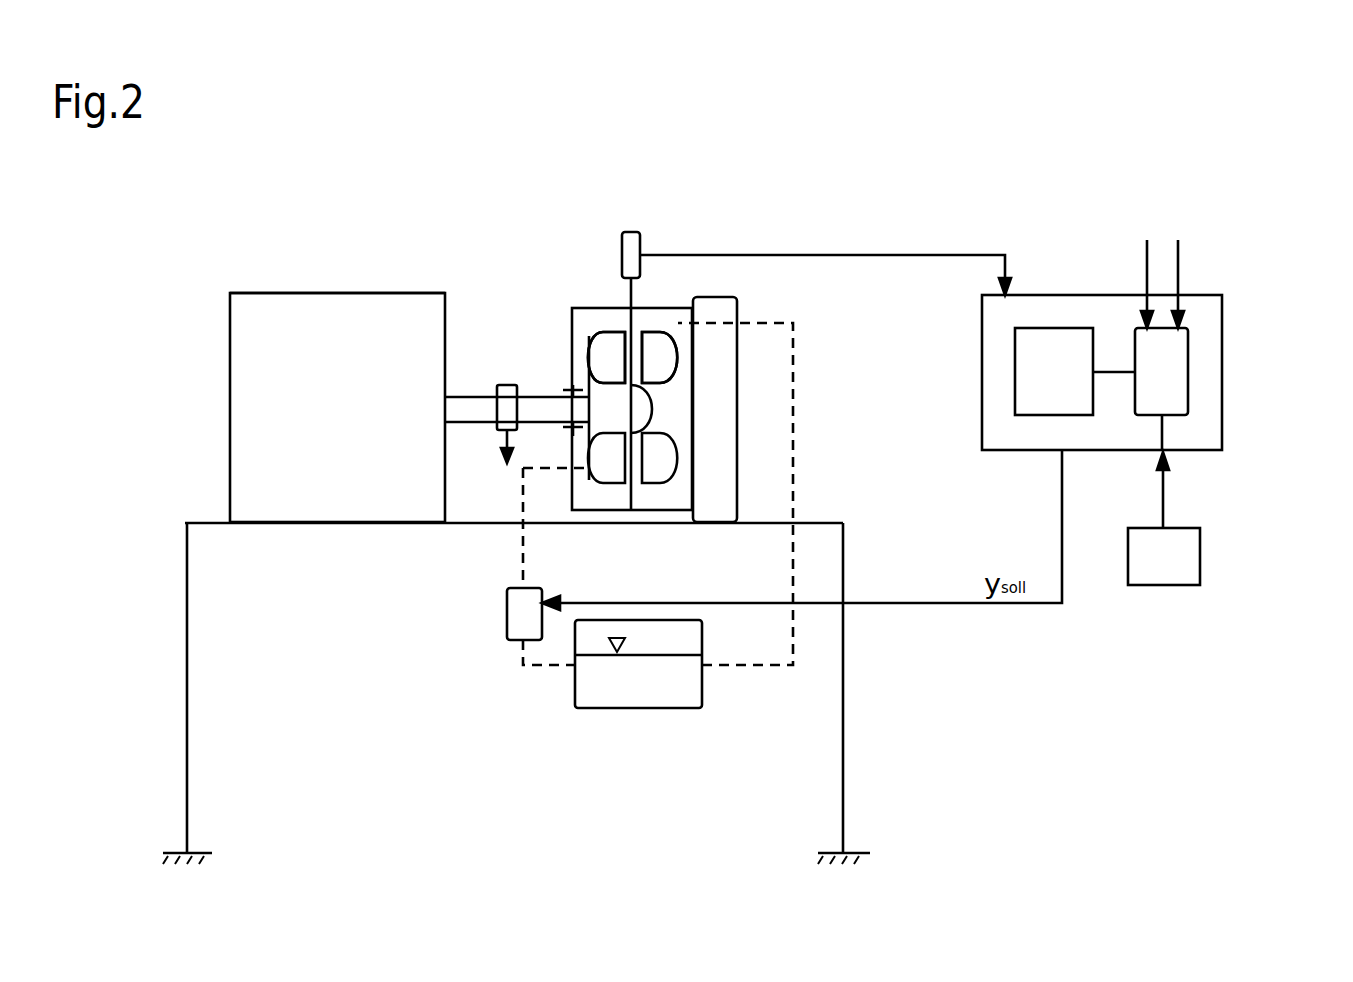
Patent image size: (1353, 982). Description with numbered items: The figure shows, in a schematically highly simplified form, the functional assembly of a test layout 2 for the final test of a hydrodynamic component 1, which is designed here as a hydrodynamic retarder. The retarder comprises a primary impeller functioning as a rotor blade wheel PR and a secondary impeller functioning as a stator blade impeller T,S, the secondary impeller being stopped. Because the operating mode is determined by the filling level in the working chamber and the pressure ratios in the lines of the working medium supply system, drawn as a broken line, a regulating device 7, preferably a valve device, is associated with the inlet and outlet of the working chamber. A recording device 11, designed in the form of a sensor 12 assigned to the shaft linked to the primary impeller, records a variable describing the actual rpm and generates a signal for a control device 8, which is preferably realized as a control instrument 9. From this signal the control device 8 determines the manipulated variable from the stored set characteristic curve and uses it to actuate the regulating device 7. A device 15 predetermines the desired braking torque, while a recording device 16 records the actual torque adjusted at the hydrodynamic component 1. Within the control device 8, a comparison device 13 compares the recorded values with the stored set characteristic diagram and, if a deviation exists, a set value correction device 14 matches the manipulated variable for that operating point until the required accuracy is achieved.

The hydrodynamic component 1 is at (677, 135).
The test layout 2 is at (551, 135).
The regulating device 7 is at (507, 618).
The control device 8 is at (1158, 344).
The control instrument 9 is at (1210, 436).
The recording device 11 is at (501, 401).
The sensor 12 is at (507, 385).
The comparison device 13 is at (1188, 365).
The set value correction device 14 is at (1025, 365).
The device for predetermining a desired braking torque 15 is at (1203, 565).
The recording device 16 is at (632, 232).
The primary impeller functioning as rotor blade wheel PR is at (603, 343).
The secondary impeller functioning as stator blade impeller T,S is at (652, 345).